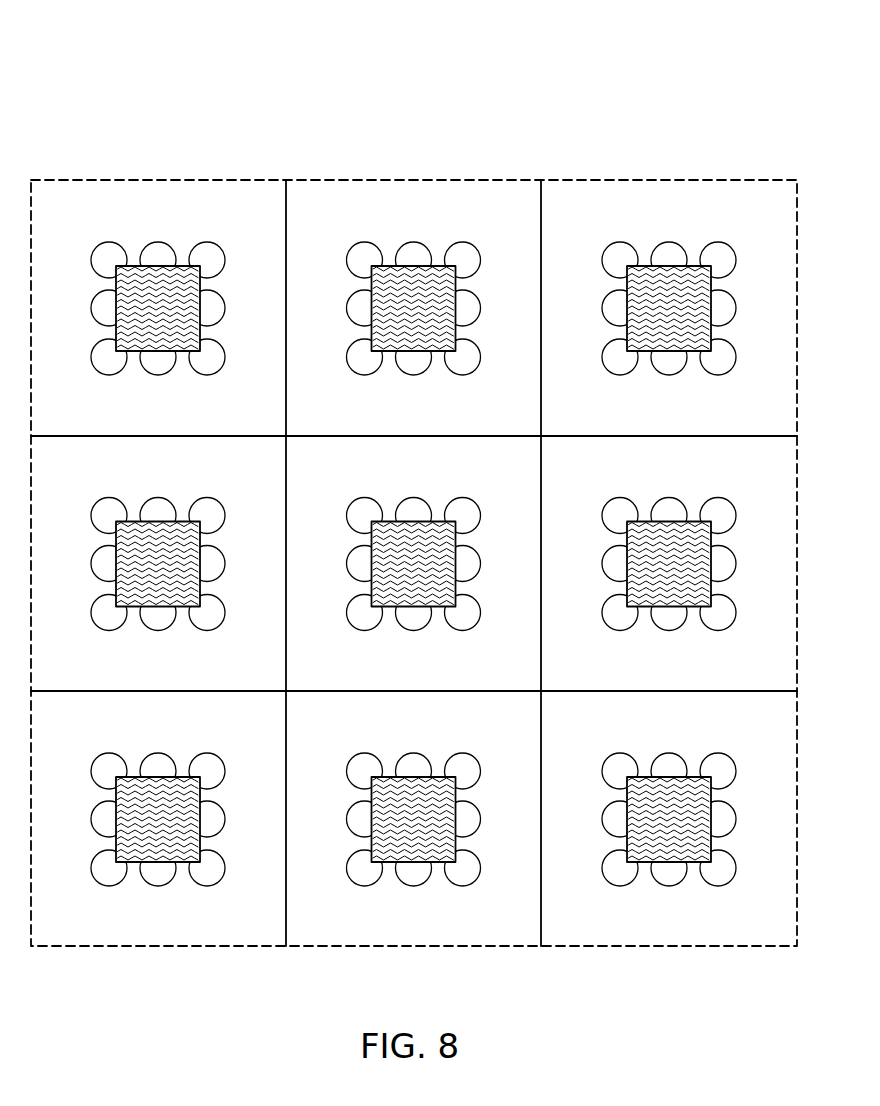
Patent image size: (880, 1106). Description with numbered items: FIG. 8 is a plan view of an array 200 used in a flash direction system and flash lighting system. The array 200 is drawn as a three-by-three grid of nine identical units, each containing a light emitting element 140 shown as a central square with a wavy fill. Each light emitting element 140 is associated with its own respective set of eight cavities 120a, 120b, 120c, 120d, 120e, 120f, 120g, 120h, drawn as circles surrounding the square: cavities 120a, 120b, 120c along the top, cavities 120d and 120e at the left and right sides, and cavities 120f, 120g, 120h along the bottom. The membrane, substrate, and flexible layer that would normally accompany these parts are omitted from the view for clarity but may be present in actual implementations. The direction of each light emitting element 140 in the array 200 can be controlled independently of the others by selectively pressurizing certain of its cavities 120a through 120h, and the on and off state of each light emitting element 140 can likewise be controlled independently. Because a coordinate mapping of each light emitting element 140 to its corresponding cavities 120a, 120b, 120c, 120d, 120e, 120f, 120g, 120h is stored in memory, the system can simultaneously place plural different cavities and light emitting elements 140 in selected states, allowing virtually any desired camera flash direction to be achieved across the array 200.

The array 200 is at (192, 135).
The cavity 120a is at (98, 246).
The cavity 120b is at (158, 242).
The cavity 120c is at (211, 243).
The cavity 120d is at (93, 299).
The cavity 120e is at (248, 288).
The cavity 120f is at (101, 376).
The cavity 120g is at (158, 376).
The cavity 120h is at (211, 376).
The light emitting element 140 is at (122, 332).